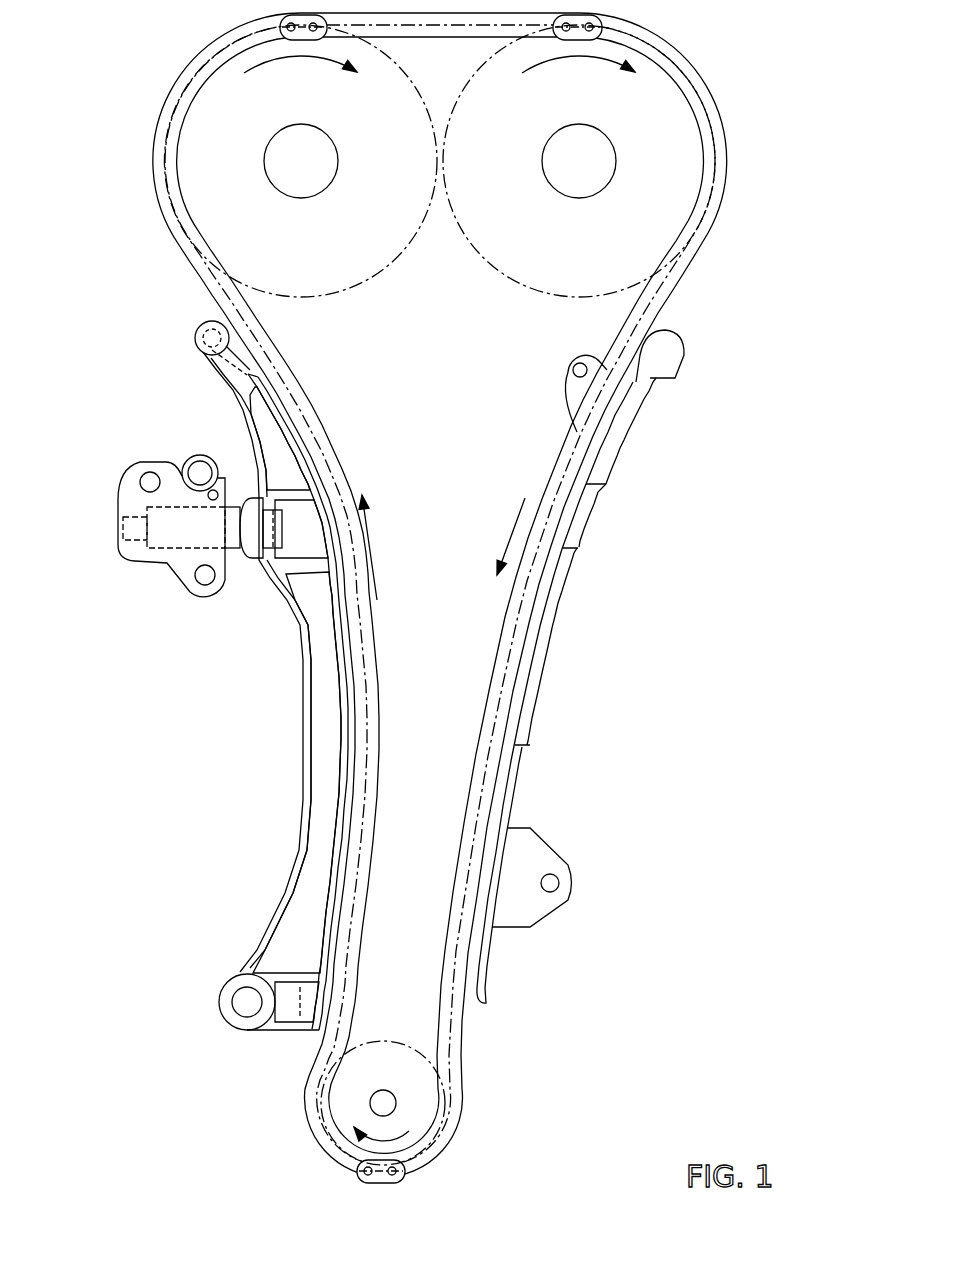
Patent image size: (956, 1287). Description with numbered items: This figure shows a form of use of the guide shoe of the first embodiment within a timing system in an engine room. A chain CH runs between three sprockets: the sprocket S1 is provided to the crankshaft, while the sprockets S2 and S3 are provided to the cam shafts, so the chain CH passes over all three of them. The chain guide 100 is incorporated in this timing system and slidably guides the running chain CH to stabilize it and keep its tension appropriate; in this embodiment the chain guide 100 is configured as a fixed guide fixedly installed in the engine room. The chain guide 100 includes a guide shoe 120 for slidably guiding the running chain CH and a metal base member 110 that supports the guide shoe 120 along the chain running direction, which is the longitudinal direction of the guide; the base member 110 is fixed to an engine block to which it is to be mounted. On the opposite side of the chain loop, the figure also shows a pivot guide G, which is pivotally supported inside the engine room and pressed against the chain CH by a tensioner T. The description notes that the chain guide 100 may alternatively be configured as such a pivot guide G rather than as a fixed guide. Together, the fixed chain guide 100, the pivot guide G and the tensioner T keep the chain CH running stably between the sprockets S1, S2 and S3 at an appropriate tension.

The chain CH is at (657, 300).
The sprocket S1 is at (417, 1105).
The sprocket S2 is at (212, 155).
The sprocket S3 is at (650, 145).
The tensioner T is at (133, 500).
The pivot guide G is at (318, 882).
The chain guide 100 is at (580, 666).
The base member 110 is at (560, 585).
The guide shoe 120 is at (567, 537).